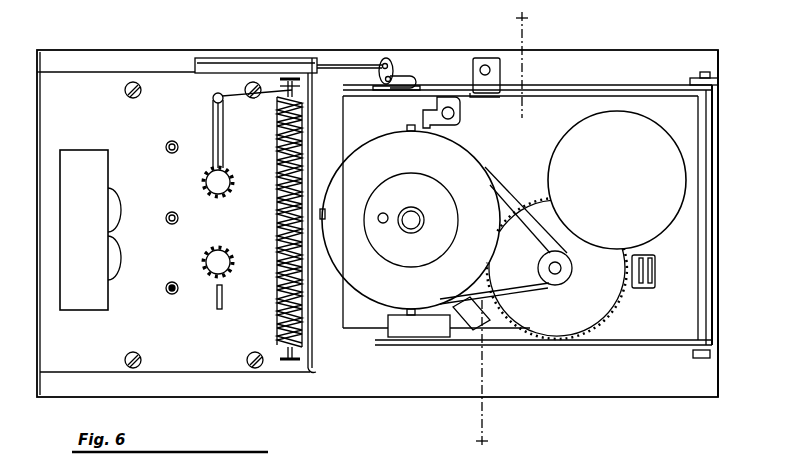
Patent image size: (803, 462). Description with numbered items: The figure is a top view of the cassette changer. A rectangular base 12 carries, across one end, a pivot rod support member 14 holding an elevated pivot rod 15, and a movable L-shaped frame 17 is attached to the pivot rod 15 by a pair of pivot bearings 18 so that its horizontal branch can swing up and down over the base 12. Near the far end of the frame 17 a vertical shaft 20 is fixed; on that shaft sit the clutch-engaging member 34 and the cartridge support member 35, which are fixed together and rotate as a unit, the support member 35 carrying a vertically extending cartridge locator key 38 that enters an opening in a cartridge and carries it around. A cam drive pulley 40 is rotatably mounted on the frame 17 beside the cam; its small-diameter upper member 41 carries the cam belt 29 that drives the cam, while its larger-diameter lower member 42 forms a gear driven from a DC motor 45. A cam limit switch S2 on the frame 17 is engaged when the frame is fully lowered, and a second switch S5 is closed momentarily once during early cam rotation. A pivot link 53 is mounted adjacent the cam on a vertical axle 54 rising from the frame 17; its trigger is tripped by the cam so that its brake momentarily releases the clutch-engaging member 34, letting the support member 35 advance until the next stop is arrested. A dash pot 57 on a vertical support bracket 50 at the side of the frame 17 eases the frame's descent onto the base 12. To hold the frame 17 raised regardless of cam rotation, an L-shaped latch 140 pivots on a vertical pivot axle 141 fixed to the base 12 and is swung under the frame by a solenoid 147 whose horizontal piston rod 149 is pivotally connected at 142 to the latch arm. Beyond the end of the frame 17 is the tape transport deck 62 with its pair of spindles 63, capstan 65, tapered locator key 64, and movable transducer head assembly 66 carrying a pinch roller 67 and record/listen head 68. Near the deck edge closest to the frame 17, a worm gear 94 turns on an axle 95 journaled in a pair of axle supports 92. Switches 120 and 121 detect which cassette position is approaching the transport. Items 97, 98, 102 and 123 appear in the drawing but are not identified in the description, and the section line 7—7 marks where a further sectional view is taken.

The section line 7- 7 is at (520, 18).
The rectangular base 12 is at (107, 62).
The pivot rod support member 14 is at (727, 93).
The pivot rod 15 is at (700, 118).
The L-shaped frame 17 is at (475, 136).
The pivot bearings 18 is at (702, 76).
The vertical shaft 20 is at (424, 208).
The cam belt 29 is at (499, 187).
The clutch-engaging member 34 is at (332, 257).
The cartridge support member 35 is at (391, 264).
The cartridge locator key 38 is at (383, 212).
The cam drive pulley 40 is at (551, 312).
The small diameter upper member 41 is at (564, 272).
The larger diameter lower member 42 is at (508, 261).
The DC motor 45 is at (607, 184).
The vertical support bracket 50 is at (475, 100).
The pivot link 53 is at (440, 126).
The vertical axle 54 is at (422, 118).
The dash pot 57 is at (492, 70).
The tape transport deck 62 is at (62, 83).
The spindles 63 is at (219, 257).
The tapered locator key 64 is at (223, 300).
The capstan 65 is at (166, 218).
The transducer head assembly 66 is at (80, 167).
The pinch roller 67 is at (117, 200).
The record/listen head 68 is at (121, 265).
The axle supports 92 is at (292, 77).
The worm gear 94 is at (274, 188).
The axle 95 is at (300, 355).
The pivot 97 is at (212, 101).
The arm 98 is at (225, 141).
The link 102 is at (232, 92).
The switch 120 is at (663, 291).
The switch 121 is at (637, 293).
The switch housing 123 is at (657, 255).
The pivoted latch 140 is at (411, 76).
The vertical pivot axle 141 is at (394, 76).
The pivotal connection 142 is at (386, 60).
The solenoid 147 is at (252, 64).
The piston rod 149 is at (343, 64).
The cam limit switch S2 is at (423, 330).
The switch S5 is at (468, 312).